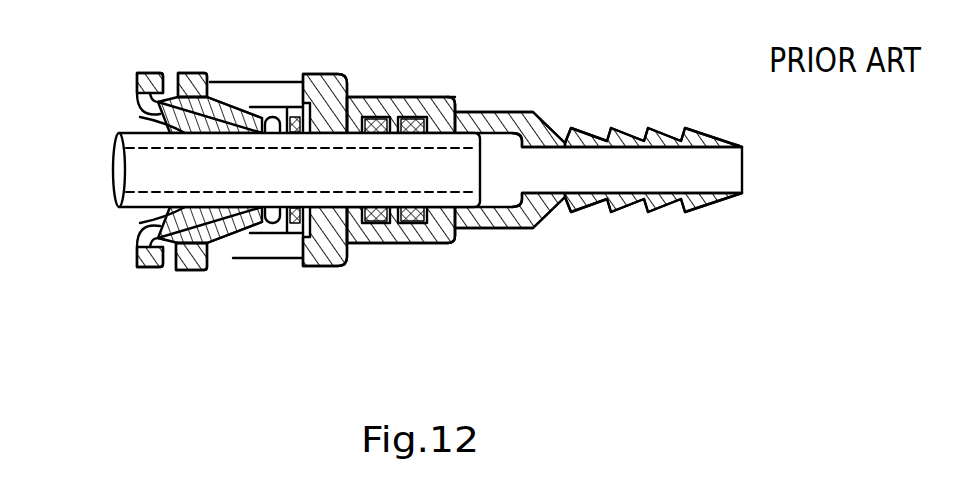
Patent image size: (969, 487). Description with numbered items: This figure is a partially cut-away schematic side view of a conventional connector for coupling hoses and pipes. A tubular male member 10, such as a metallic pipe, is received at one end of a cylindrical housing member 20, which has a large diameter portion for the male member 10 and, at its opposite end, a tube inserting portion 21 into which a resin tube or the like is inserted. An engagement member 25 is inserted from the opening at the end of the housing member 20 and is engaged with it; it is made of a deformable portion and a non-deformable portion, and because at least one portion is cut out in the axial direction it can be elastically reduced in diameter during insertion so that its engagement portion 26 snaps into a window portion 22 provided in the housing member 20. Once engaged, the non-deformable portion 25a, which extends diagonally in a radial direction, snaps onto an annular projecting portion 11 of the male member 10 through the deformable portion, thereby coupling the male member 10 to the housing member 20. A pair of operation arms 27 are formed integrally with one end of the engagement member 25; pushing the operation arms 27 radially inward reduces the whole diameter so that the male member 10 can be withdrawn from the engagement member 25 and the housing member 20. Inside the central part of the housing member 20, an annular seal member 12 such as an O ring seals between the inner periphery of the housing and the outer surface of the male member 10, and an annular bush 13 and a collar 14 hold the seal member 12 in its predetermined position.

The tubular male member 10 is at (115, 178).
The annular projecting portion 11 is at (273, 220).
The annular seal member 12 is at (417, 117).
The annular bush 13 is at (328, 80).
The collar 14 is at (397, 235).
The cylindrical housing member 20 is at (484, 112).
The tube inserting portion 21 is at (610, 206).
The window portion 22 is at (240, 258).
The engagement member 25 is at (140, 117).
The non-deformable portion 25a is at (236, 90).
The engagement portion 26 is at (205, 268).
The operation arm 27 is at (150, 80).